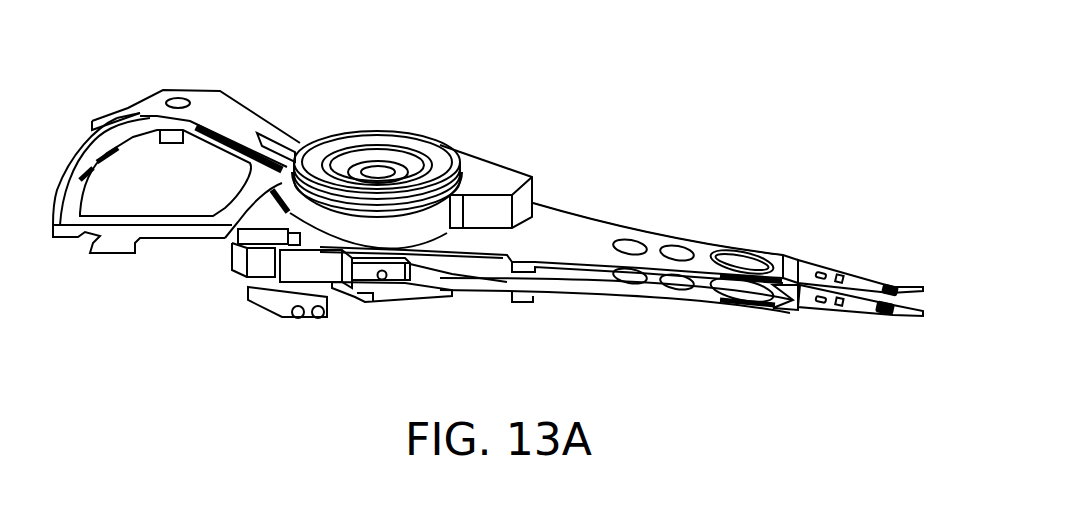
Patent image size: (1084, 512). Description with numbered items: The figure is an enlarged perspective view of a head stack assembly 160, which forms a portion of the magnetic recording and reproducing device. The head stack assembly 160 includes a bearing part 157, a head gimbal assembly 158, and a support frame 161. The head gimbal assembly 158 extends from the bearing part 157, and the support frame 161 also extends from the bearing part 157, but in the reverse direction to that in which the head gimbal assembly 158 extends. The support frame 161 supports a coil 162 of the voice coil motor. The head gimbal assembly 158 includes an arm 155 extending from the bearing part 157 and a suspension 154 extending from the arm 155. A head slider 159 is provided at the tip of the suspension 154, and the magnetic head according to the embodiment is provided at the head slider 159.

The suspension 154 is at (857, 282).
The arm 155 is at (703, 248).
The bearing part 157 is at (400, 101).
The head gimbal assembly 158 is at (640, 204).
The head slider 159 is at (893, 287).
The head stack assembly 160 is at (601, 127).
The support frame 161 is at (217, 112).
The coil 162 is at (136, 211).